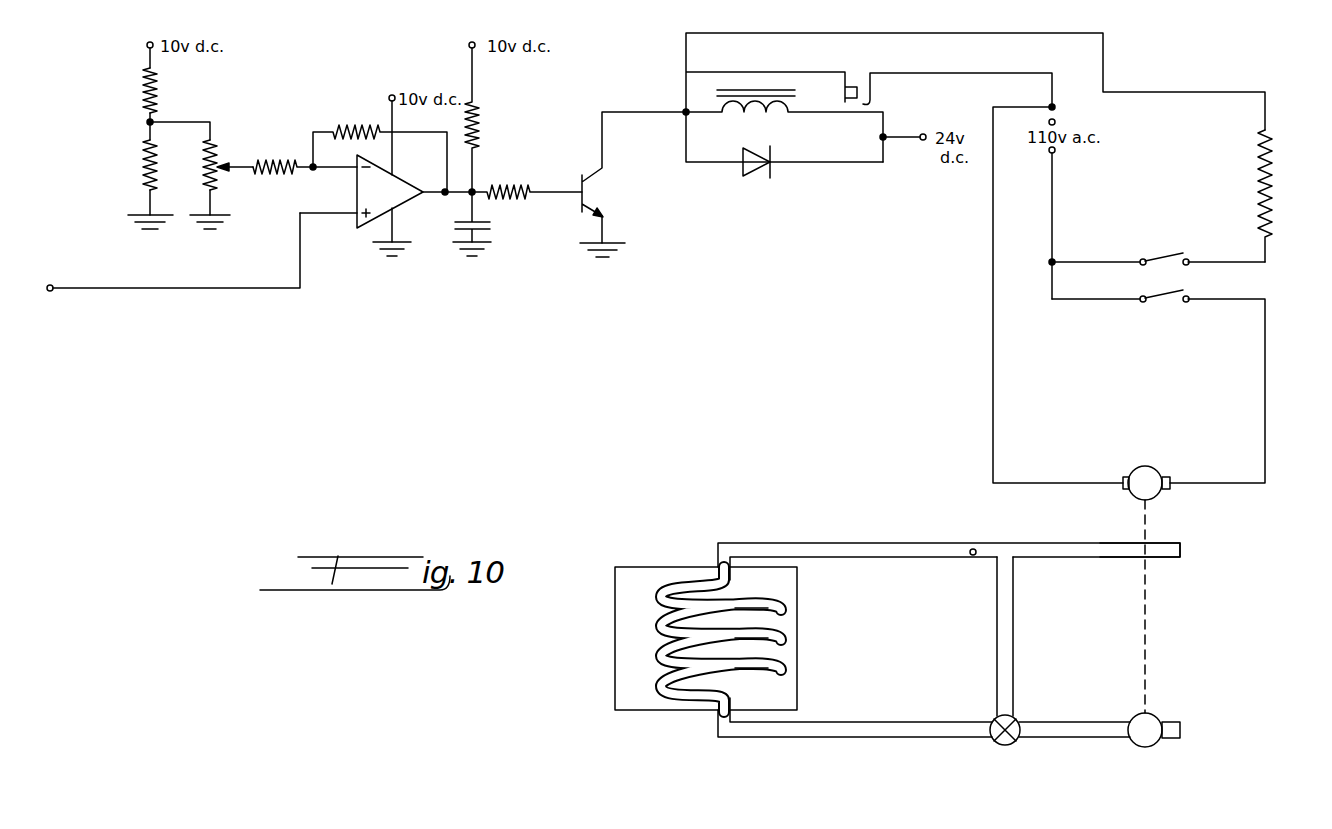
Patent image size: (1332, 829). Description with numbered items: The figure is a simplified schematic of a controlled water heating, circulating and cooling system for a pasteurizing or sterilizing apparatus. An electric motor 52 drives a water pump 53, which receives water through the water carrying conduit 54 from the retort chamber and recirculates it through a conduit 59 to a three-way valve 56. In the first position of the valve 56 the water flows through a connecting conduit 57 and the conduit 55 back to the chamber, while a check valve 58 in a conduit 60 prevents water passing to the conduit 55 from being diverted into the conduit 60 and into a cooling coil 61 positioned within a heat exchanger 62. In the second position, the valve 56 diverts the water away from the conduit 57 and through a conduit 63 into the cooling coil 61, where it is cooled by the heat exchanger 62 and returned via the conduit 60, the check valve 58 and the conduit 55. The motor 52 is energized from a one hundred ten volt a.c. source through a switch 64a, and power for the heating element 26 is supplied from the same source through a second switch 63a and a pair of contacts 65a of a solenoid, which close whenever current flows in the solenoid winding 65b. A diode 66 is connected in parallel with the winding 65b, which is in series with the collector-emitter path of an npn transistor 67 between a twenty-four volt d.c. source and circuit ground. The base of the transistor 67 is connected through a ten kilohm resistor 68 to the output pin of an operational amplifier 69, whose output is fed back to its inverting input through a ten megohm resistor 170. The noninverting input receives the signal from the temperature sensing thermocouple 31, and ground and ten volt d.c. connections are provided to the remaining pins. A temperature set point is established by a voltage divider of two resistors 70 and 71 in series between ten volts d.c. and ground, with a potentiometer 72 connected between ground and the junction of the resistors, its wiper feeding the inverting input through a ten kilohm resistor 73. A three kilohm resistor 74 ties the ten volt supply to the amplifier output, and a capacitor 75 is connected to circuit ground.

The resistor 70 is at (158, 89).
The resistor 71 is at (143, 166).
The potentiometer 72 is at (214, 147).
The resistor 73 is at (260, 172).
The resistor 170 is at (343, 130).
The operational amplifier 69 is at (401, 182).
The temperature sensing thermocouple 31 is at (176, 276).
The resistor 74 is at (480, 123).
The capacitor 75 is at (491, 227).
The resistor 68 is at (494, 187).
The npn transistor 67 is at (598, 190).
The winding of the solenoid 65b is at (720, 97).
The contacts of the solenoid 65a is at (918, 107).
The diode 66 is at (765, 178).
The heating element 26 is at (1273, 182).
The second switch 63a is at (1185, 251).
The switch 64a is at (1184, 299).
The electric motor 52 is at (1160, 495).
The water pump 53 is at (1152, 722).
The water carrying conduit 54 is at (1182, 730).
The conduit 55 is at (1182, 556).
The three-way valve 56 is at (1015, 718).
The connecting conduit 57 is at (1014, 647).
The check valve 58 is at (974, 523).
The conduit 59 is at (1066, 738).
The conduit 60 is at (895, 548).
The cooling coil 61 is at (776, 638).
The heat exchanger 62 is at (614, 648).
The conduit 63 is at (868, 722).